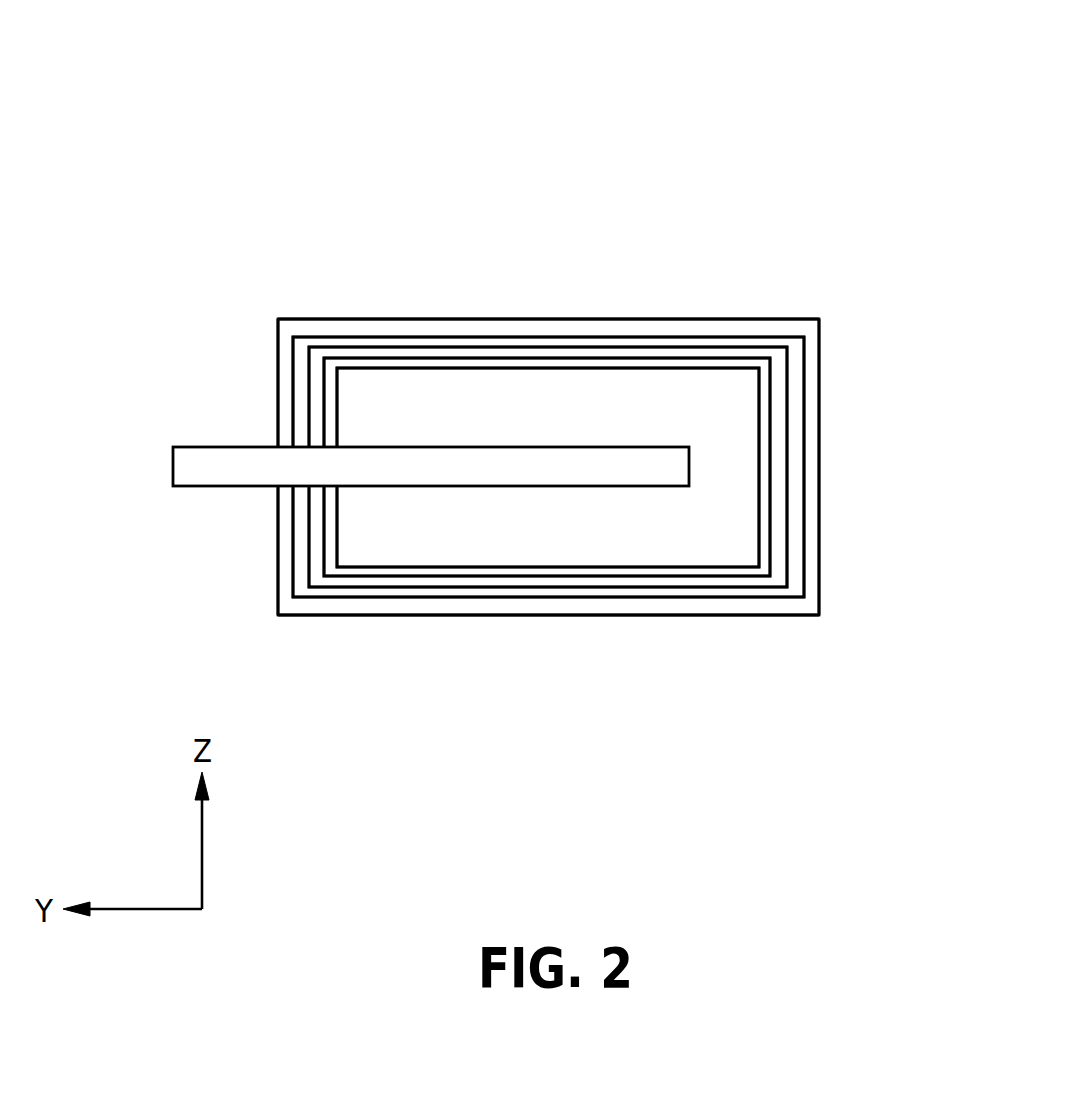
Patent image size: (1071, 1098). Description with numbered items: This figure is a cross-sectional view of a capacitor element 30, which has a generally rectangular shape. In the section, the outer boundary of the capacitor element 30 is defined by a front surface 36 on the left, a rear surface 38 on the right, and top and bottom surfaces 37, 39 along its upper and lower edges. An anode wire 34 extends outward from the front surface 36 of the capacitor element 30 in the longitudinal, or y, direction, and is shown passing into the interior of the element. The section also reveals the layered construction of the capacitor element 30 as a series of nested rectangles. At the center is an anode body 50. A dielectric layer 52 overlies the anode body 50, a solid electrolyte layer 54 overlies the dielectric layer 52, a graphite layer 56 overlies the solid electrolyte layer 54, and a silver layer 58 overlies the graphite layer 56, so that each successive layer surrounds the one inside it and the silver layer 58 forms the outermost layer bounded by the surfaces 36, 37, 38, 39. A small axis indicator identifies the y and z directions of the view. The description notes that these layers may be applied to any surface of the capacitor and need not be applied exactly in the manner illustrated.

The capacitor element 30 is at (557, 362).
The anode wire 34 is at (542, 462).
The front surface 36 is at (277, 549).
The top surface 37 is at (567, 318).
The rear surface 38 is at (820, 465).
The bottom surface 39 is at (552, 615).
The anode body 50 is at (668, 402).
The dielectric layer 52 is at (767, 375).
The solid electrolyte layer 54 is at (778, 413).
The graphite layer 56 is at (793, 535).
The silver layer 58 is at (812, 588).